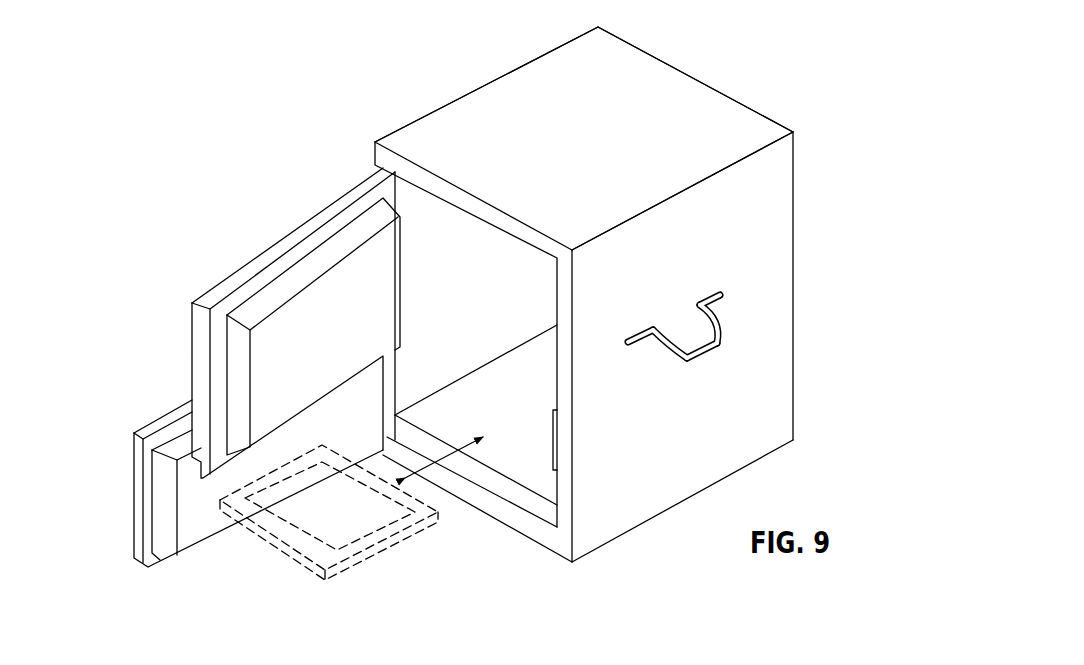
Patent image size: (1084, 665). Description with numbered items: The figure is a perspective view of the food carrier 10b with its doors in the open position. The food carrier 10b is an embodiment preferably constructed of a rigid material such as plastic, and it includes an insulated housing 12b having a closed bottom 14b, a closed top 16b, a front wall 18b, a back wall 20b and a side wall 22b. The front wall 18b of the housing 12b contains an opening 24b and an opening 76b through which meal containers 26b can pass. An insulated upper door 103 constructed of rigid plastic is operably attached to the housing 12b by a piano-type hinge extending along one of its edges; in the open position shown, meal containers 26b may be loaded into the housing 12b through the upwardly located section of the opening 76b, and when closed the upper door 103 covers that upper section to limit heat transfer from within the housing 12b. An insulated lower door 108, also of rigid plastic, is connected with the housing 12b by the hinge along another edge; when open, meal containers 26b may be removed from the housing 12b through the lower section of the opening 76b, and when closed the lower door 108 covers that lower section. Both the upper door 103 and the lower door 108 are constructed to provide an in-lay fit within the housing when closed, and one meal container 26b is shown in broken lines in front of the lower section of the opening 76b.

The food carrier 10b is at (792, 38).
The housing 12b is at (681, 58).
The bottom 14b is at (641, 527).
The top 16b is at (712, 105).
The front wall 18b is at (553, 537).
The back wall 20b is at (792, 360).
The side wall 22b is at (487, 80).
The opening 24b is at (775, 280).
The meal containers 26b is at (386, 560).
The opening 76b is at (463, 298).
The upper door 103 is at (257, 262).
The lower door 108 is at (140, 523).